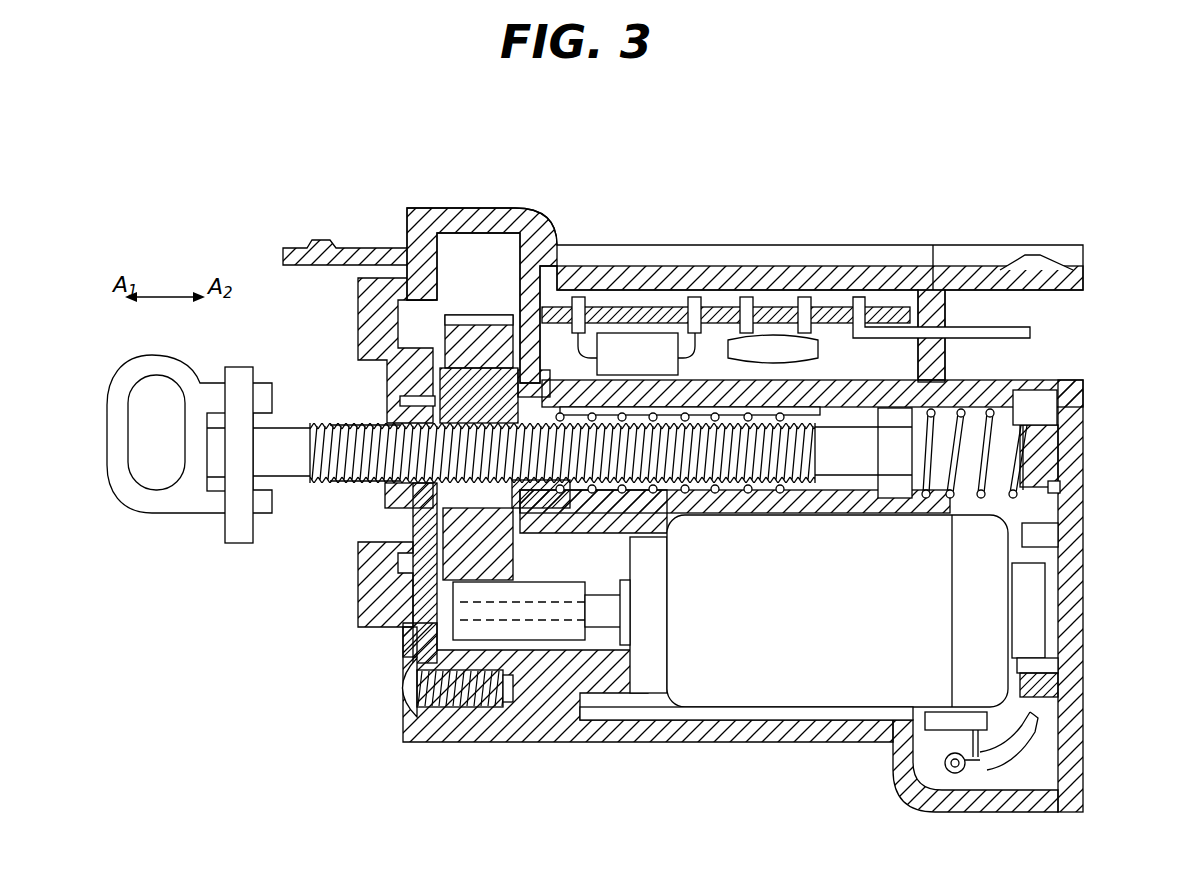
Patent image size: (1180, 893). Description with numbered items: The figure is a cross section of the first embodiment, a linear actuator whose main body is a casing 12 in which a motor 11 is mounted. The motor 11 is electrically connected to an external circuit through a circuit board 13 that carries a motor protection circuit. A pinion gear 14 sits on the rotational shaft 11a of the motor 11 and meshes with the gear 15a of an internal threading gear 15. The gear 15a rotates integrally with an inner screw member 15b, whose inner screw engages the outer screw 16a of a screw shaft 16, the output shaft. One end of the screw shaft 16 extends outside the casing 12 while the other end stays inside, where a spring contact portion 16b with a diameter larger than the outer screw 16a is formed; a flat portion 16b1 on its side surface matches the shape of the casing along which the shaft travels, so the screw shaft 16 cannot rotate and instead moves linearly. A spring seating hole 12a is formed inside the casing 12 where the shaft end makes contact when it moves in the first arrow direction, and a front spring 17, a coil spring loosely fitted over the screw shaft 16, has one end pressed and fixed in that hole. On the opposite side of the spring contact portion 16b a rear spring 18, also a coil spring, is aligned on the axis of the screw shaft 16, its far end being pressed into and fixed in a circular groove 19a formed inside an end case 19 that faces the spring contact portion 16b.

The motor 11 is at (762, 725).
The rotational shaft 11a is at (403, 643).
The casing 12 is at (538, 252).
The spring seating hole 12a is at (590, 420).
The circuit board 13 is at (830, 307).
The pinion gear 14 is at (558, 638).
The internal threading gear 15 is at (476, 300).
The gear 15a is at (452, 337).
The inner screw member 15b is at (415, 400).
The screw shaft 16 is at (330, 487).
The outer screw 16a is at (370, 487).
The spring contact portion 16b is at (900, 455).
The flat portion 16b1 is at (925, 440).
The front spring 17 is at (783, 420).
The rear spring 18 is at (915, 437).
The end case 19 is at (1068, 445).
The circular groove 19a is at (1060, 487).